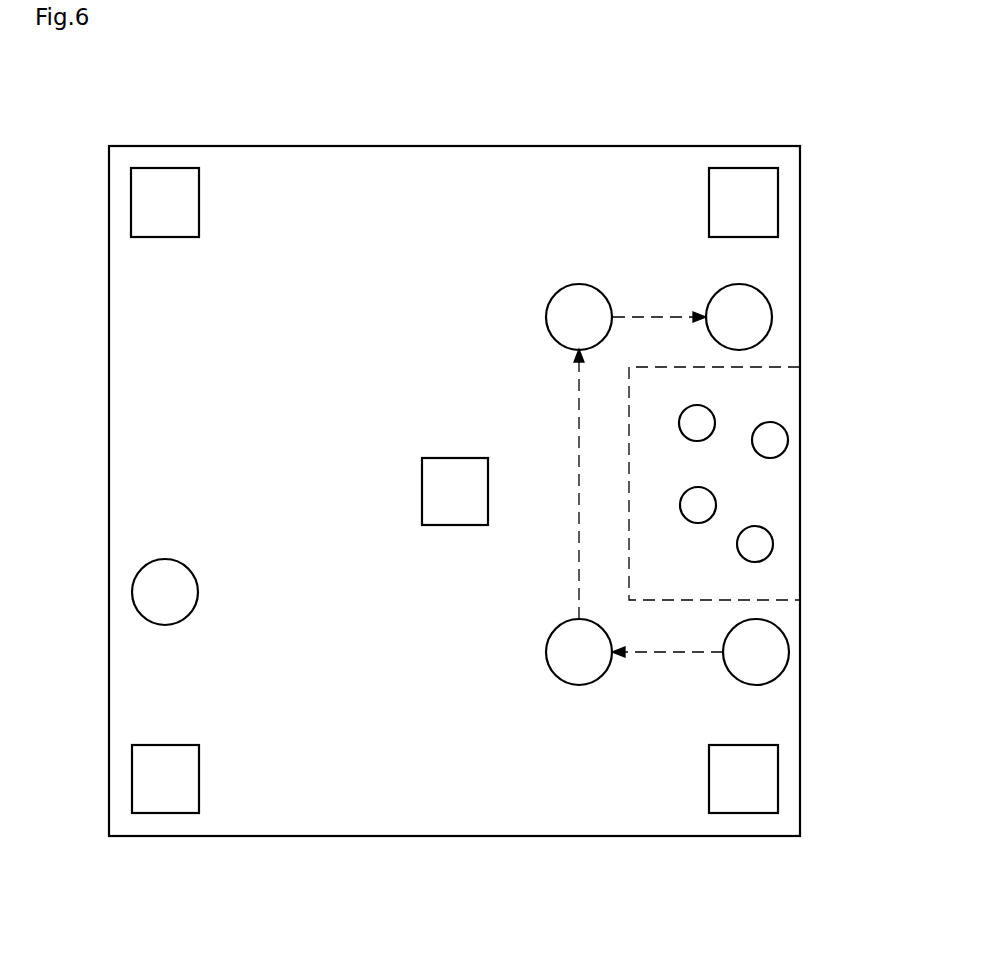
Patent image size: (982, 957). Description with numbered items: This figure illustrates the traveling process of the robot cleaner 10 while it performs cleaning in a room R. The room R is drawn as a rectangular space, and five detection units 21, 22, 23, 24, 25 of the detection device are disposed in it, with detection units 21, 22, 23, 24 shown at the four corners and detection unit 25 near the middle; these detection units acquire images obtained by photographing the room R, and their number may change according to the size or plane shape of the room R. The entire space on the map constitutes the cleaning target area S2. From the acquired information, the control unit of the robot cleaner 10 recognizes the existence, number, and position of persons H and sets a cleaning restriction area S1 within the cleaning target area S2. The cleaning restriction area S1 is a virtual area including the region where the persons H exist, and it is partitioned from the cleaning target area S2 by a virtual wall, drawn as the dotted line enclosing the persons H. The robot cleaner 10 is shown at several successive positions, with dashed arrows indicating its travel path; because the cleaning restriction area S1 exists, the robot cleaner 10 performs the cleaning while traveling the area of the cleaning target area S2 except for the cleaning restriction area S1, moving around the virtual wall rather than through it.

The room R is at (455, 146).
The robot cleaner 10 is at (579, 300).
The detection unit 21 is at (170, 186).
The detection unit 22 is at (748, 186).
The detection unit 23 is at (170, 797).
The detection unit 24 is at (748, 797).
The detection unit 25 is at (459, 478).
The cleaning restriction area S1 is at (785, 395).
The cleaning target area S2 is at (785, 318).
The person H is at (775, 438).